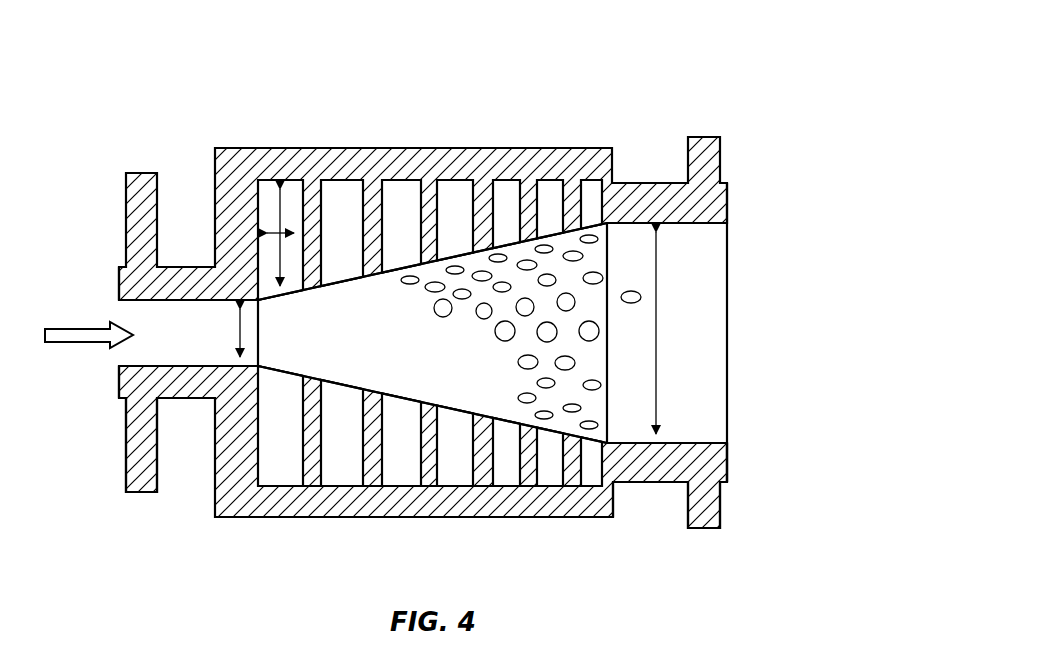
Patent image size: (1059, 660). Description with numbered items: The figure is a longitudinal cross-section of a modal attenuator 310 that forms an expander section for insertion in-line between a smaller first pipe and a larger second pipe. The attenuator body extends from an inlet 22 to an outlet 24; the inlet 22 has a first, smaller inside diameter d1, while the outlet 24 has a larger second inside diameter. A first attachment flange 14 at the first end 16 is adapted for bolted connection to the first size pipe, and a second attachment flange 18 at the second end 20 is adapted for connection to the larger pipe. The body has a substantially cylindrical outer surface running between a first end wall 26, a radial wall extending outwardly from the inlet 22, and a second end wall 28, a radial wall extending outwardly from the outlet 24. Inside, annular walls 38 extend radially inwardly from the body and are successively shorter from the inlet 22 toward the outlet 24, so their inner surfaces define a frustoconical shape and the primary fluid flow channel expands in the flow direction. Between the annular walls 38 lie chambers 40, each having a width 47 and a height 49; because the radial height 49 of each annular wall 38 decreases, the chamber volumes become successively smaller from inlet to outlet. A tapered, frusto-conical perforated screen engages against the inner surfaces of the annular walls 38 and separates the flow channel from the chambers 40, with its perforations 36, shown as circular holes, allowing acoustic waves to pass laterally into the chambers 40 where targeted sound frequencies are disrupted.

The modal attenuator 310 is at (664, 76).
The first attachment flange 14 is at (127, 437).
The first end 16 is at (118, 388).
The second attachment flange 18 is at (722, 510).
The second end 20 is at (727, 462).
The inlet 22 is at (188, 333).
The outlet 24 is at (667, 332).
The first end wall 26 is at (216, 503).
The second end wall 28 is at (613, 500).
The perforations 36 is at (565, 362).
The annular walls 38 is at (311, 455).
The chambers 40 is at (430, 333).
The width 47 is at (272, 232).
The height 49 is at (282, 212).
The first inside diameter d1 is at (243, 331).